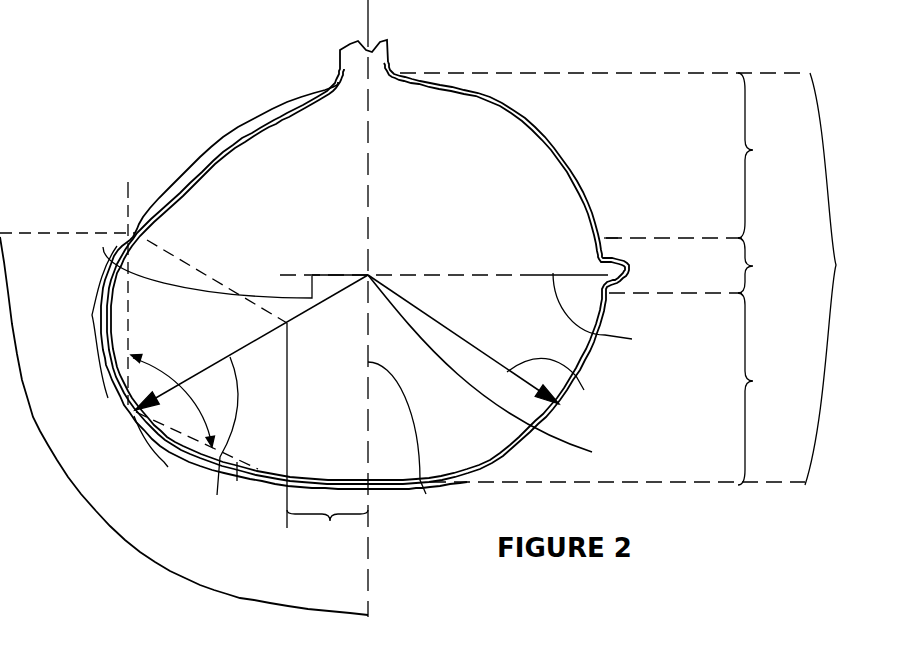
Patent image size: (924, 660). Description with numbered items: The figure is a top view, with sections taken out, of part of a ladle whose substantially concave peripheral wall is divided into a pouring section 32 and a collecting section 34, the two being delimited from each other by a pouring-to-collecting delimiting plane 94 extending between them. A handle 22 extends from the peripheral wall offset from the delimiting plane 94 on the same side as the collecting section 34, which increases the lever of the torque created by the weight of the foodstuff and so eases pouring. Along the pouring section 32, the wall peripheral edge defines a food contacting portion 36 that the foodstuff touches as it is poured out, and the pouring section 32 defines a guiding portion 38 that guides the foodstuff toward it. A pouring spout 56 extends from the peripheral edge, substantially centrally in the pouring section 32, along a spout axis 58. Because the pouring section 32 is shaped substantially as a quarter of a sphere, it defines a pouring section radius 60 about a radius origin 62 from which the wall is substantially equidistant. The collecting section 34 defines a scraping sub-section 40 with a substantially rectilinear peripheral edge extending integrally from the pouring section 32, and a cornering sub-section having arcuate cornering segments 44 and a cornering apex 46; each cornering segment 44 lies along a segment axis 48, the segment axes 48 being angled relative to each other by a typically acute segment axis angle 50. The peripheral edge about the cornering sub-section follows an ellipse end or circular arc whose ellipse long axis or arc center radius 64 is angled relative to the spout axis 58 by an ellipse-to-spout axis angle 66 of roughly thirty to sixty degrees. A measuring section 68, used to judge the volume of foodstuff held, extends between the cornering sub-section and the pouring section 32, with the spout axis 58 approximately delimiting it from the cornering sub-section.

The handle 22 is at (352, 57).
The pouring section 32 is at (833, 279).
The collecting section 34 is at (77, 492).
The food contacting portion 36 is at (693, 265).
The guiding portion 38 is at (604, 279).
The scraping sub-section 40 is at (327, 526).
The cornering segment 44 is at (116, 366).
The cornering apex 46 is at (126, 418).
The segment axis 48 is at (127, 194).
The segment axis angle 50 is at (116, 396).
The pouring spout 56 is at (614, 238).
The spout axis 58 is at (604, 311).
The pouring section radius 60 is at (483, 341).
The radius origin 62 is at (493, 367).
The ellipse long axis or arc center radius 64 is at (184, 435).
The ellipse-to-spout axis angle 66 is at (196, 266).
The measuring section 68 is at (224, 139).
The pouring-to-collecting delimiting plane 94 is at (406, 436).